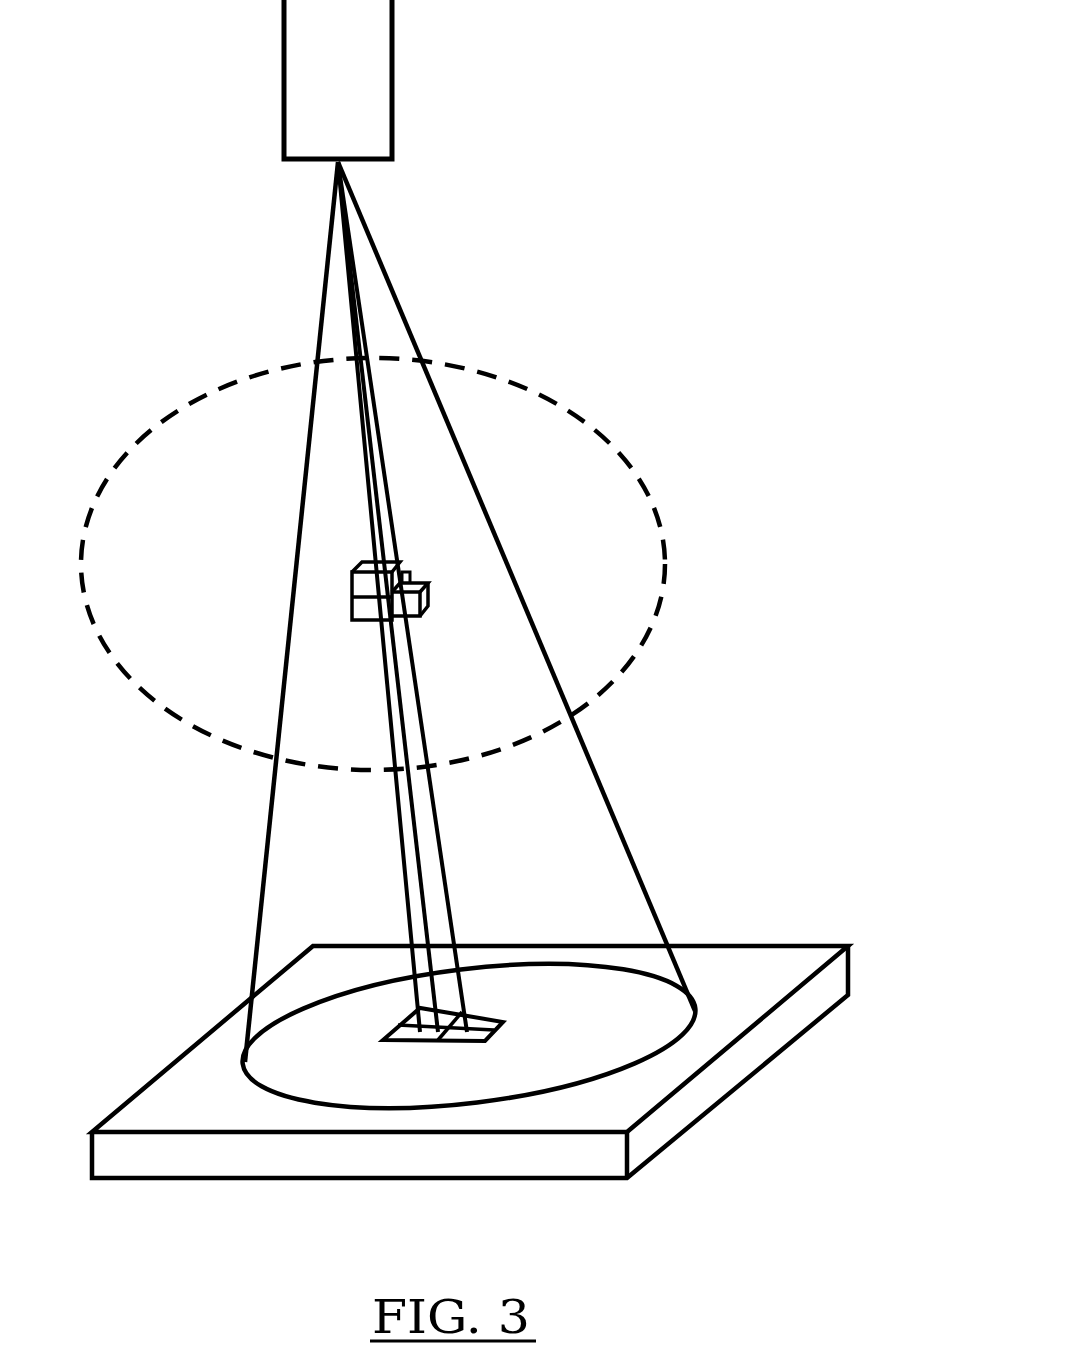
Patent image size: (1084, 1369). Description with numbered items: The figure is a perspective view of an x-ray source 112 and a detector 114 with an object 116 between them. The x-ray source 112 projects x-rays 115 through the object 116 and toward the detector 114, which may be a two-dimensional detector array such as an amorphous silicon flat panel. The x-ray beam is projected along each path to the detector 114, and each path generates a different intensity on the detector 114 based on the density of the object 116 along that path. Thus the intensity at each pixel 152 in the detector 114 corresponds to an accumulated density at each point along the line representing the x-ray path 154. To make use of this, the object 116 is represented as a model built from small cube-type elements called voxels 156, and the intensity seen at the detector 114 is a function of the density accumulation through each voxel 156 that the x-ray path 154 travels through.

The x-ray source 112 is at (395, 68).
The detector 114 is at (850, 982).
The x-rays 115 is at (385, 273).
The object 116 is at (613, 455).
The pixel 152 is at (467, 987).
The x-ray path 154 is at (398, 822).
The voxel 156 is at (334, 586).